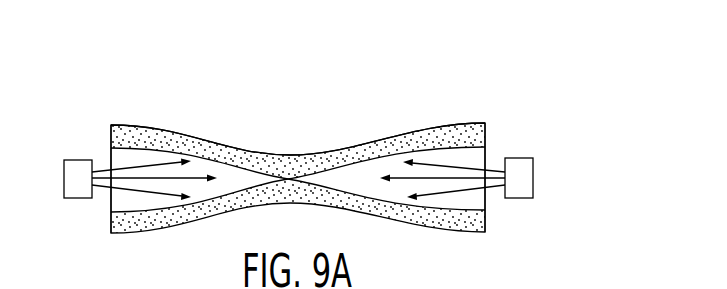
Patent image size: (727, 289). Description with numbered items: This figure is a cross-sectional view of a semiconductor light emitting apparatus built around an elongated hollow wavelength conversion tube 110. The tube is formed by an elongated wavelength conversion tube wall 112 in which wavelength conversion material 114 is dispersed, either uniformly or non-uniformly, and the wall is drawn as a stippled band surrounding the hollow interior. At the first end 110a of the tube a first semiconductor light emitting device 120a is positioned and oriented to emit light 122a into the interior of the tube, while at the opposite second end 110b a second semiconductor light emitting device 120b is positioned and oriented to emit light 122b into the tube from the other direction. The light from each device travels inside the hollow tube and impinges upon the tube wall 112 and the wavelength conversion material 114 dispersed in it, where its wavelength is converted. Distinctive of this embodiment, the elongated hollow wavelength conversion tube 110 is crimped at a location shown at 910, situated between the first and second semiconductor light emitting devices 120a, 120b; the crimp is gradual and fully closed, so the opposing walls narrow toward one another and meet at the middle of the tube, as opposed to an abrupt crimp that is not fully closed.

The elongated hollow wavelength conversion tube 110 is at (237, 108).
The first end 110a is at (104, 212).
The second end 110b is at (498, 207).
The elongated wavelength conversion tube wall 112 is at (400, 128).
The wavelength conversion material 114 is at (173, 140).
The first semiconductor light emitting device 120a is at (78, 170).
The second semiconductor light emitting device 120b is at (518, 166).
The light 122a is at (147, 180).
The light 122b is at (452, 178).
The crimp 910 is at (298, 156).